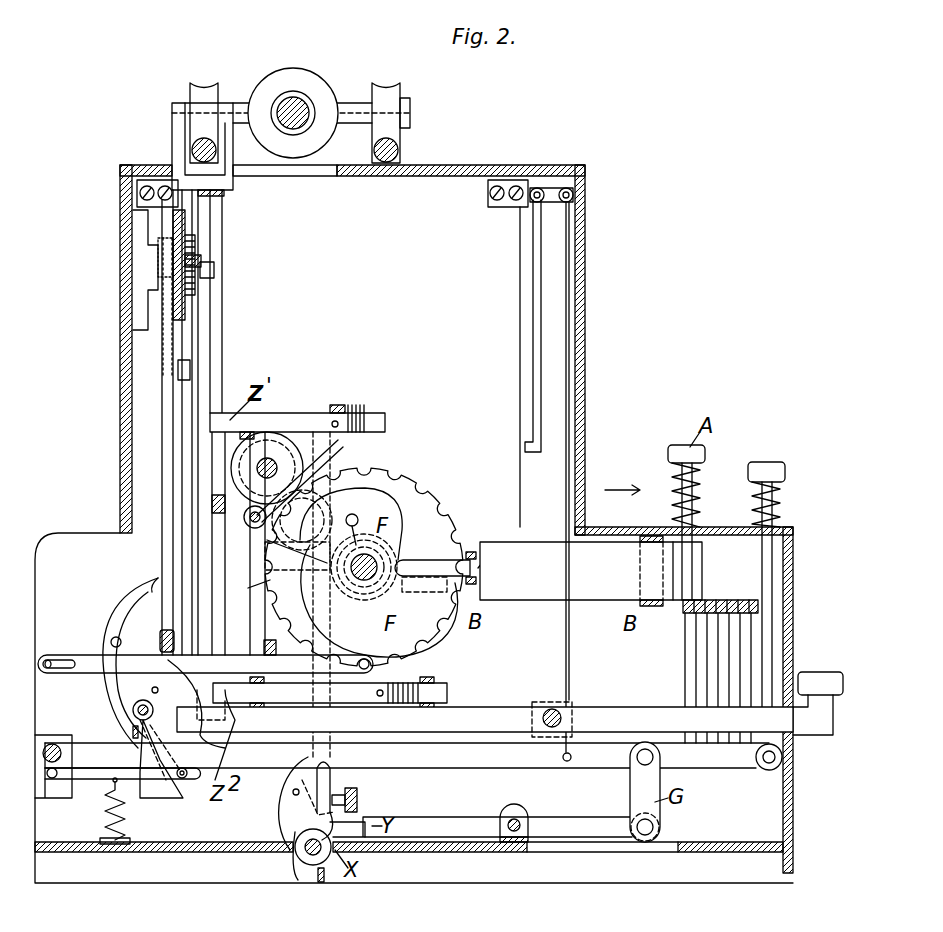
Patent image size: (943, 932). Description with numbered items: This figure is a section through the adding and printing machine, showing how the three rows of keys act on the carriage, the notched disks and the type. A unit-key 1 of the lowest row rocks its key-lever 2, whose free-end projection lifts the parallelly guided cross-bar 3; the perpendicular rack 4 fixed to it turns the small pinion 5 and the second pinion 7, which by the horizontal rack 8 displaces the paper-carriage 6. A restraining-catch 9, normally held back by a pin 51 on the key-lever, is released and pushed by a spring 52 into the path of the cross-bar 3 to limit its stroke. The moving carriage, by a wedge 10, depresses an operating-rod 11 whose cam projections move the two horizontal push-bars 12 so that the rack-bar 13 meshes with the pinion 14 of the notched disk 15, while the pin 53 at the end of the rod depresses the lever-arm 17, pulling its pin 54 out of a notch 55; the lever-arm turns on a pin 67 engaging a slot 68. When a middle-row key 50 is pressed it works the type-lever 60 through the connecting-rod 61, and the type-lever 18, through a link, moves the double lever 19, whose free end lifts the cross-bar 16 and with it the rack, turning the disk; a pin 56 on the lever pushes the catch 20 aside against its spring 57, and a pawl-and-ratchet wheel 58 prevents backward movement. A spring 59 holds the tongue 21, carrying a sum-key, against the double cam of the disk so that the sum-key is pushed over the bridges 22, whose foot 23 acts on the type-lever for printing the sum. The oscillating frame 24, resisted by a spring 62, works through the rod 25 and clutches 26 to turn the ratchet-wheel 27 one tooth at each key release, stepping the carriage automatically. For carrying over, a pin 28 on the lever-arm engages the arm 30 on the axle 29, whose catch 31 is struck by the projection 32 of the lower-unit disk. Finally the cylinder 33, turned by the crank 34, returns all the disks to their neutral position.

The unit-key 1 is at (815, 672).
The key-lever 2 is at (485, 719).
The cross-bar 3 is at (158, 640).
The perpendicular rack 4 is at (158, 470).
The small pinion 5 is at (153, 270).
The paper-carriage 6 is at (262, 100).
The second pinion 7 is at (172, 264).
The horizontal rack 8 is at (189, 422).
The restraining-catch 9 is at (142, 590).
The wedge 10 is at (224, 205).
The operating-rod 11 is at (222, 420).
The horizontal push-bar 12 is at (328, 557).
The rack-bar 13 is at (334, 782).
The pinion 14 is at (364, 576).
The notched disk 15 is at (379, 572).
The cross-bar 16 is at (360, 800).
The lever-arm 17 is at (200, 283).
The type-lever 18 is at (408, 766).
The double lever 19 is at (482, 823).
The catch 20 is at (306, 811).
The tongue 21 is at (435, 561).
The bridge 22 is at (720, 600).
The foot 23 is at (704, 678).
The oscillating frame 24 is at (94, 780).
The rod 25 is at (205, 543).
The clutch 26 is at (170, 350).
The ratchet-wheel 27 is at (199, 259).
The pin 28 is at (262, 648).
The axle 29 is at (241, 551).
The arm 30 is at (258, 610).
The catch 31 is at (277, 567).
The projection 32 is at (356, 580).
The cylinder 33 is at (248, 519).
The crank 34 is at (305, 491).
The middle-row key 50 is at (768, 462).
The pin 51 is at (152, 688).
The spring 52 is at (112, 636).
The pin 53 is at (212, 712).
The pin 54 is at (416, 657).
The notch 55 is at (430, 490).
The pin 56 is at (300, 885).
The spring 57 is at (272, 828).
The pawl-and-ratchet wheel 58 is at (401, 544).
The spring 59 is at (535, 585).
The type-lever 60 is at (535, 335).
The connecting-rod 61 is at (570, 388).
The spring 62 is at (130, 818).
The pin 67 is at (48, 655).
The slot 68 is at (72, 670).